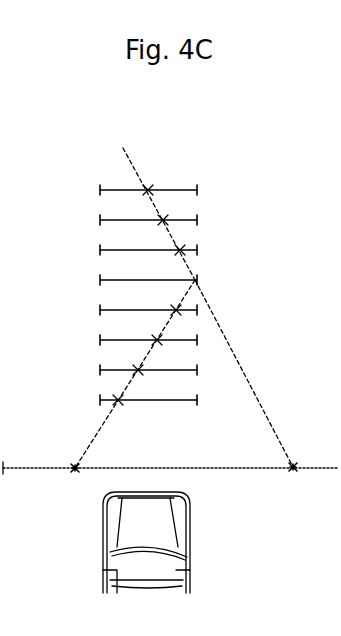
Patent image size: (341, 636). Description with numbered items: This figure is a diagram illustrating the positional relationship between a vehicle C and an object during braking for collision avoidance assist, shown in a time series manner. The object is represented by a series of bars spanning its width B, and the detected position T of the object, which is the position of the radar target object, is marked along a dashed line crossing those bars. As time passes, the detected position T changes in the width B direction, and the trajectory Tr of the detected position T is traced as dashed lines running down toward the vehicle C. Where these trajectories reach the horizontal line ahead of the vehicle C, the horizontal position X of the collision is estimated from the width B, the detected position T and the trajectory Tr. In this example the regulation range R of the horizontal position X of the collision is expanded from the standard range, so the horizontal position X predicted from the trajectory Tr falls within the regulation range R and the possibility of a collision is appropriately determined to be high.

The width of the object B is at (198, 187).
The detected position of the object T is at (152, 183).
The trajectory of the detected position Tr is at (97, 433).
The regulation range of the horizontal position of the collision R is at (190, 467).
The horizontal position of the collision X is at (73, 466).
The vehicle C is at (190, 560).